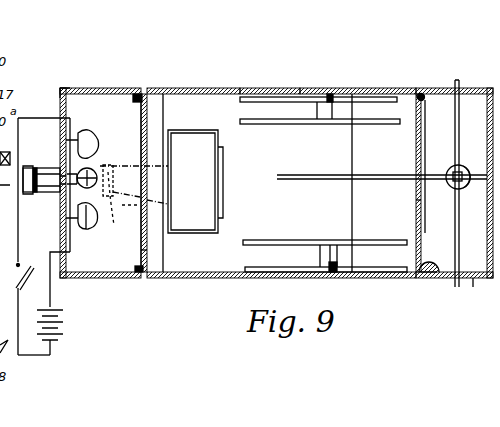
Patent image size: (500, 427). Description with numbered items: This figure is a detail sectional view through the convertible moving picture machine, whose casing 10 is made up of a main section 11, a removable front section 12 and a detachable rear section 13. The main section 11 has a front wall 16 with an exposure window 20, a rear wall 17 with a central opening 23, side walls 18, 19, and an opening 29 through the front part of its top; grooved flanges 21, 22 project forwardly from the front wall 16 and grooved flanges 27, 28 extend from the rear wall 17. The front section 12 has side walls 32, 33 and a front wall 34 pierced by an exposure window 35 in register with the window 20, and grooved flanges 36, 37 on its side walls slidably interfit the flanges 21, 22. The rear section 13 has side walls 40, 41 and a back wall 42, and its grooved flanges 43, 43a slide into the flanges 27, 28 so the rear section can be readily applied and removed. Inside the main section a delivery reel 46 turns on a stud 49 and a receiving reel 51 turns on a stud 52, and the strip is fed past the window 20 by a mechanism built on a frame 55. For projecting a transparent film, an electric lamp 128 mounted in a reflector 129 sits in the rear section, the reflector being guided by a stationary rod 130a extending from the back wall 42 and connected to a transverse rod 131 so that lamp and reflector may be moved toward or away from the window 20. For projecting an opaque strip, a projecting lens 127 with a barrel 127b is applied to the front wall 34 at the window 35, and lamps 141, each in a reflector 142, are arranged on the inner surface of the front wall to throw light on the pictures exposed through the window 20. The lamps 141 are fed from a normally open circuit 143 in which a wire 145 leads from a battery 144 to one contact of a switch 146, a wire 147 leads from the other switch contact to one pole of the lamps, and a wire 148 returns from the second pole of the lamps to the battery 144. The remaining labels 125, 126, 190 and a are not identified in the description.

The housing corner 190 is at (60, 89).
The electric circuit 143 is at (19, 118).
The wire 147 is at (33, 118).
The projecting lens 127 is at (35, 168).
The lens barrel 127b is at (50, 193).
The reflector 142 is at (79, 206).
The switch 146 is at (33, 310).
The wire 148 is at (50, 280).
The battery 144 is at (62, 337).
The wire 145 is at (43, 355).
The side wall 33 is at (78, 88).
The front section 12 is at (100, 89).
The front wall 34 is at (70, 108).
The grooved flange 37 is at (139, 101).
The grooved flange 22 is at (143, 94).
The exposure window 35 is at (72, 173).
The electric lamp 141 is at (127, 187).
The light path 126 is at (122, 208).
The grooved flange 36 is at (135, 269).
The side wall 32 is at (100, 278).
The grooved flange 21 is at (140, 279).
The side wall 19 is at (185, 89).
The front wall 16 is at (146, 118).
The exposure window 20 is at (146, 163).
The frame 55 is at (218, 130).
The screen 125 is at (147, 203).
The side wall 18 is at (205, 278).
The main section 11 is at (243, 89).
The delivery reel 46 is at (295, 124).
The receiving reel 51 is at (258, 240).
The short shaft 52 is at (333, 277).
The casing 10 is at (305, 88).
The short shaft 49 is at (331, 94).
The grooved flange 28 is at (421, 95).
The grooved flange 43a is at (418, 100).
The rear section 13 is at (445, 88).
The side wall 41 is at (470, 88).
The transverse rod 131 is at (456, 105).
The reflector 129 is at (461, 165).
The electric lamp 128 is at (453, 184).
The stationary rod 130a is at (323, 180).
The opening 23 is at (417, 192).
The opening 29 is at (425, 233).
The back wall 42 is at (490, 238).
The rear wall 17 is at (413, 250).
The grooved flange 27 is at (428, 278).
The grooved flange 43 is at (432, 276).
The side wall 40 is at (473, 282).
The reflector a is at (66, 140).